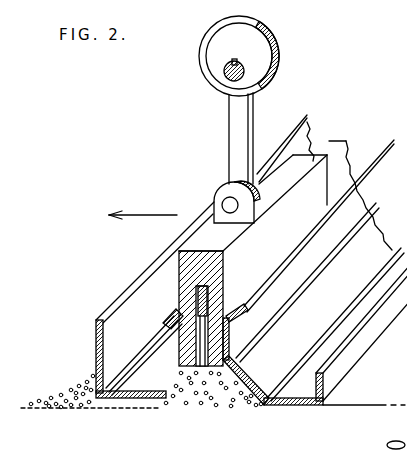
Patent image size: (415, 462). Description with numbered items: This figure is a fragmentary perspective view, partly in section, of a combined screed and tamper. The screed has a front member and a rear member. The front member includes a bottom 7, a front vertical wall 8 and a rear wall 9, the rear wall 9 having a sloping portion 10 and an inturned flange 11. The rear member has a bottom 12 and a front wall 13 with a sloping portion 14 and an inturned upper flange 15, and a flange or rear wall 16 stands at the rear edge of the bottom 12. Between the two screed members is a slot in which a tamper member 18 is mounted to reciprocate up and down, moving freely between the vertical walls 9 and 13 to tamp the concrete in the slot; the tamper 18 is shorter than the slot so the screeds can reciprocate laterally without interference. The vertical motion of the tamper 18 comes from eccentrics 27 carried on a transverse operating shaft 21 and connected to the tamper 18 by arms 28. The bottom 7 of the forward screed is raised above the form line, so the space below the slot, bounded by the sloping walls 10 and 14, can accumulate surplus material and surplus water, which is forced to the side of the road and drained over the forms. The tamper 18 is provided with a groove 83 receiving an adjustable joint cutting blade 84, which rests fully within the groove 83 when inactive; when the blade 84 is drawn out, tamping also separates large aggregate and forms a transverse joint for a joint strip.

The bottom 7 is at (125, 402).
The front vertical wall 8 is at (95, 342).
The rear wall 9 is at (170, 336).
The sloping portion 10 is at (164, 395).
The inturned flange 11 is at (177, 311).
The bottom 12 is at (295, 408).
The front wall 13 is at (258, 318).
The sloping portion 14 is at (240, 394).
The inturned upper flange 15 is at (287, 263).
The rear wall 16 is at (345, 358).
The tamper member 18 is at (310, 150).
The shaft 21 is at (224, 79).
The eccentric 27 is at (215, 63).
The arm 28 is at (229, 139).
The groove 83 is at (208, 297).
The joint cutting blade 84 is at (196, 352).